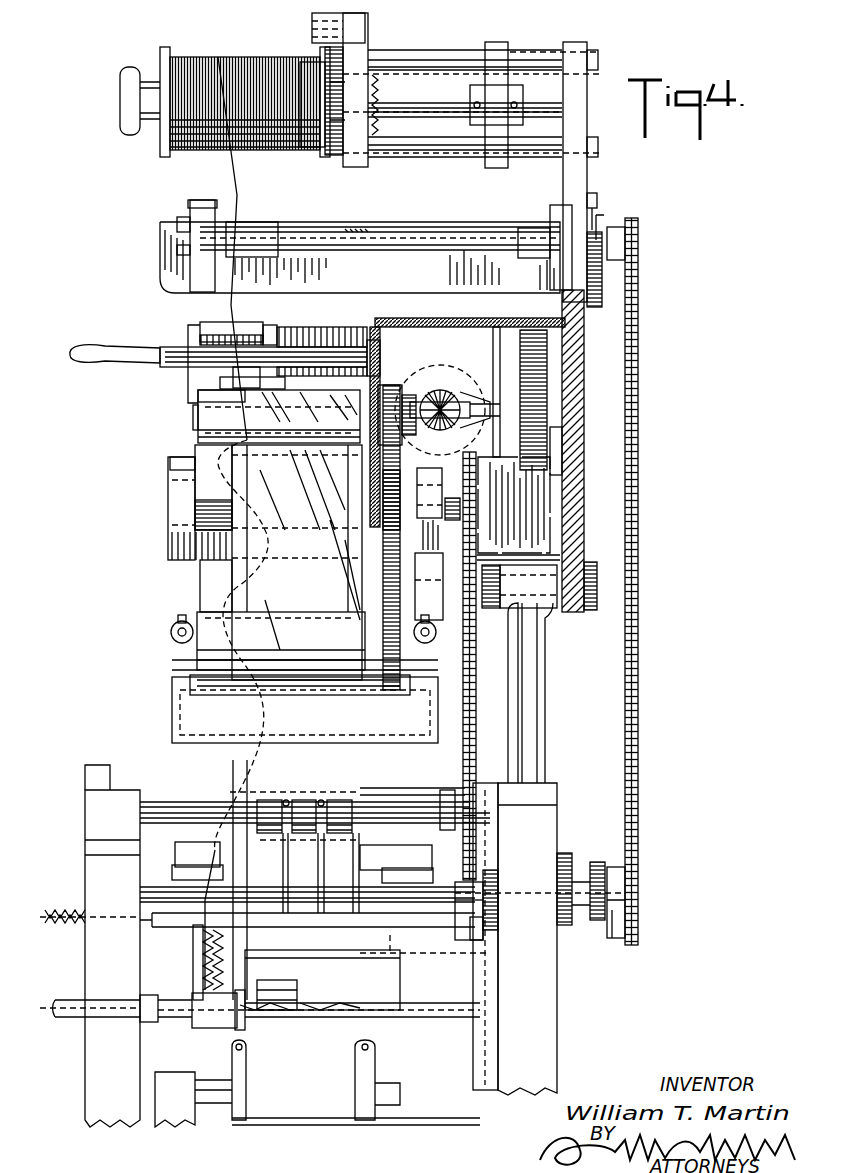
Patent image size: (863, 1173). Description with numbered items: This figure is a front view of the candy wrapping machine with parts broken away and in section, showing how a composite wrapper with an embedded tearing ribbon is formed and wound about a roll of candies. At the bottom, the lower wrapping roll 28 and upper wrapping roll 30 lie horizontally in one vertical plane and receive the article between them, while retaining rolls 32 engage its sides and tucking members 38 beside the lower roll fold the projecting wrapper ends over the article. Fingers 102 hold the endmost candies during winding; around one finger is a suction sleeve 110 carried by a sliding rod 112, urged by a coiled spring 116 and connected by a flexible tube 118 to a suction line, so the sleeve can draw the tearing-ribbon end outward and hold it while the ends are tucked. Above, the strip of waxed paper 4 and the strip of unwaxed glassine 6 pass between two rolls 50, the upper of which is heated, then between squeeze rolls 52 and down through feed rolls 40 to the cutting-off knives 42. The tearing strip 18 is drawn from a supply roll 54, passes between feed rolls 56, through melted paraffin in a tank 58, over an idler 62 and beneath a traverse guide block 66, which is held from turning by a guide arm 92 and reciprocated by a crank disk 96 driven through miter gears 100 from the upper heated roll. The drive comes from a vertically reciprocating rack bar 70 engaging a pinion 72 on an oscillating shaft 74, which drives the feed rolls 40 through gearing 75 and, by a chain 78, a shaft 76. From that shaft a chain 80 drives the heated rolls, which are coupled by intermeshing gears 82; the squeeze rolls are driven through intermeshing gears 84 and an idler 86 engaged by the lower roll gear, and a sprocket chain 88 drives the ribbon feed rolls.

The strip of waxed paper 4 is at (358, 765).
The strip of unwaxed paper or glassine 6 is at (262, 583).
The tearing strip 18 is at (238, 172).
The lower wrapping roll 28 is at (335, 1120).
The upper wrapping roll 30 is at (300, 962).
The retaining rolls 32 is at (265, 980).
The tucking members 38 is at (232, 1062).
The feed rolls 40 is at (275, 800).
The cutting off knives 42 is at (385, 925).
The rolls 50 is at (200, 455).
The squeeze rolls 52 is at (300, 692).
The supply roll 54 is at (188, 62).
The feed rolls 56 is at (268, 230).
The tank 58 is at (188, 380).
The idler 62 is at (205, 327).
The block 66 is at (220, 382).
The rack bar 70 is at (500, 1000).
The pinion 72 is at (498, 885).
The shaft 74 is at (520, 915).
The gearing 75 is at (570, 855).
The shaft 76 is at (638, 898).
The chain 78 is at (597, 922).
The chain 80 is at (476, 708).
The intermeshing gears 82 is at (395, 385).
The intermeshing gears 84 is at (385, 630).
The idler 86 is at (383, 600).
The sprocket chain 88 is at (638, 660).
The guide arm 92 is at (158, 347).
The crank disk 96 is at (440, 327).
The miter gears 100 is at (445, 390).
The fingers 102 is at (255, 1025).
The sleeve 110 is at (198, 1028).
The rod 112 is at (45, 905).
The coiled spring 116 is at (68, 972).
The flexible tube 118 is at (193, 940).